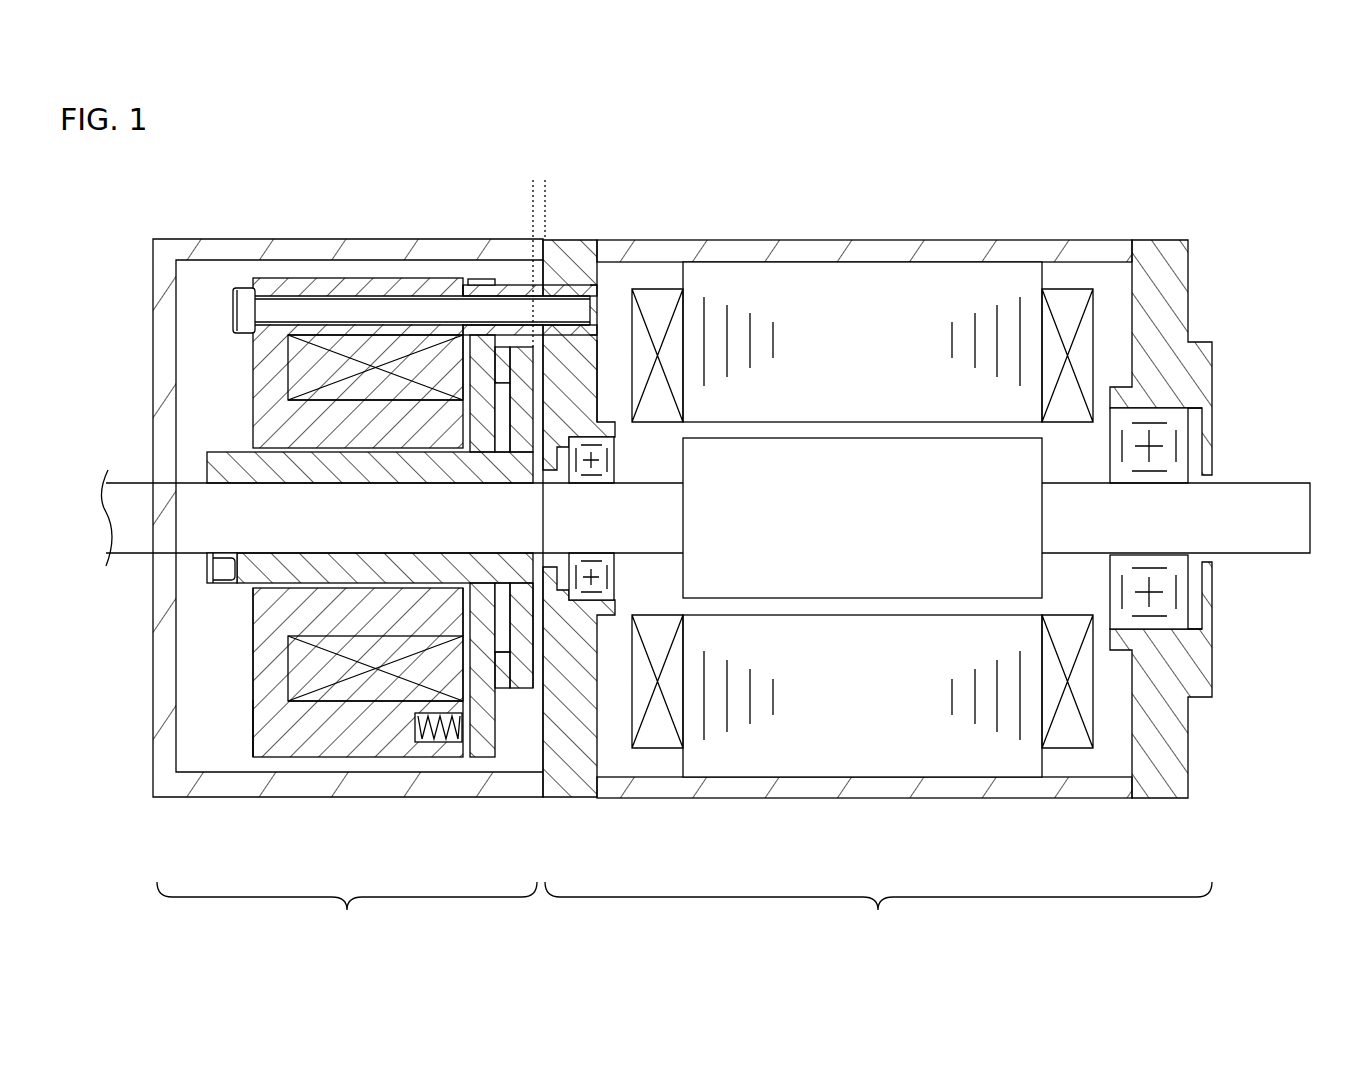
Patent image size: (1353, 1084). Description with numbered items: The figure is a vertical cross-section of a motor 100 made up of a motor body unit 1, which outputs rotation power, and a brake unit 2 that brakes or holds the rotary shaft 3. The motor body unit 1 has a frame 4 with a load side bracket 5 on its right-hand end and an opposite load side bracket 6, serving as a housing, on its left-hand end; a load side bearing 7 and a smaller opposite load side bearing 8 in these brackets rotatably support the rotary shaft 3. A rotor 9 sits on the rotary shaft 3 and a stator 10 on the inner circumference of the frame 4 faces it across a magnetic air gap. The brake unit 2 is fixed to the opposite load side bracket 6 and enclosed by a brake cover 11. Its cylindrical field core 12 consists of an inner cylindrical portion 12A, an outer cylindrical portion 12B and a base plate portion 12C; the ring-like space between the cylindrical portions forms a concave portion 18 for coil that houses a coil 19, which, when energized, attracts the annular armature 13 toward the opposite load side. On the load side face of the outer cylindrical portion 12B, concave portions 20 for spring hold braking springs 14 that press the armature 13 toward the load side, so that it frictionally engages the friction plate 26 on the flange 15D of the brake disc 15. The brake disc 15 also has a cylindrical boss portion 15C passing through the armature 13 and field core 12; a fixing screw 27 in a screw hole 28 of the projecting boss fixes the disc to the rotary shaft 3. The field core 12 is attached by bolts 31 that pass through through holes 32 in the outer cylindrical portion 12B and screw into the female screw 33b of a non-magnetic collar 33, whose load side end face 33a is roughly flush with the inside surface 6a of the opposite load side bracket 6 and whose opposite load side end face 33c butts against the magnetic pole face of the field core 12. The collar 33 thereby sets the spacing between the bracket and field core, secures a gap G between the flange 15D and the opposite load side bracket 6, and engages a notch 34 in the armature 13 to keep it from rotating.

The motor 100 is at (1262, 192).
The motor body unit 1 is at (878, 908).
The brake unit 2 is at (347, 908).
The rotary shaft 3 is at (1255, 555).
The frame 4 is at (843, 248).
The load side bracket 5 is at (1188, 290).
The opposite load side bracket 6 is at (562, 795).
The inside surface 6a is at (600, 360).
The load side bearing 7 is at (1180, 448).
The opposite load side bearing 8 is at (615, 447).
The rotor 9 is at (1047, 590).
The stator 10 is at (1047, 282).
The brake cover 11 is at (280, 245).
The field core 12 is at (357, 760).
The inner cylindrical portion 12A is at (393, 695).
The outer cylindrical portion 12B is at (308, 745).
The base plate portion 12C is at (272, 690).
The armature 13 is at (483, 760).
The braking spring 14 is at (387, 610).
The brake disc 15 is at (522, 692).
The boss portion 15C is at (253, 695).
The flange 15D is at (525, 663).
The concave portion for coil 18 is at (410, 345).
The coil 19 is at (372, 340).
The concave portion for spring 20 is at (437, 742).
The friction plate 26 is at (503, 690).
The fixing screw 27 is at (222, 562).
The screw hole 28 is at (216, 580).
The bolt 31 is at (233, 312).
The through hole 32 is at (342, 297).
The collar 33 is at (555, 296).
The load side end face 33a is at (600, 290).
The female screw 33b is at (598, 310).
The opposite load side end face 33c is at (452, 298).
The notch 34 is at (480, 300).
The gap G is at (585, 192).